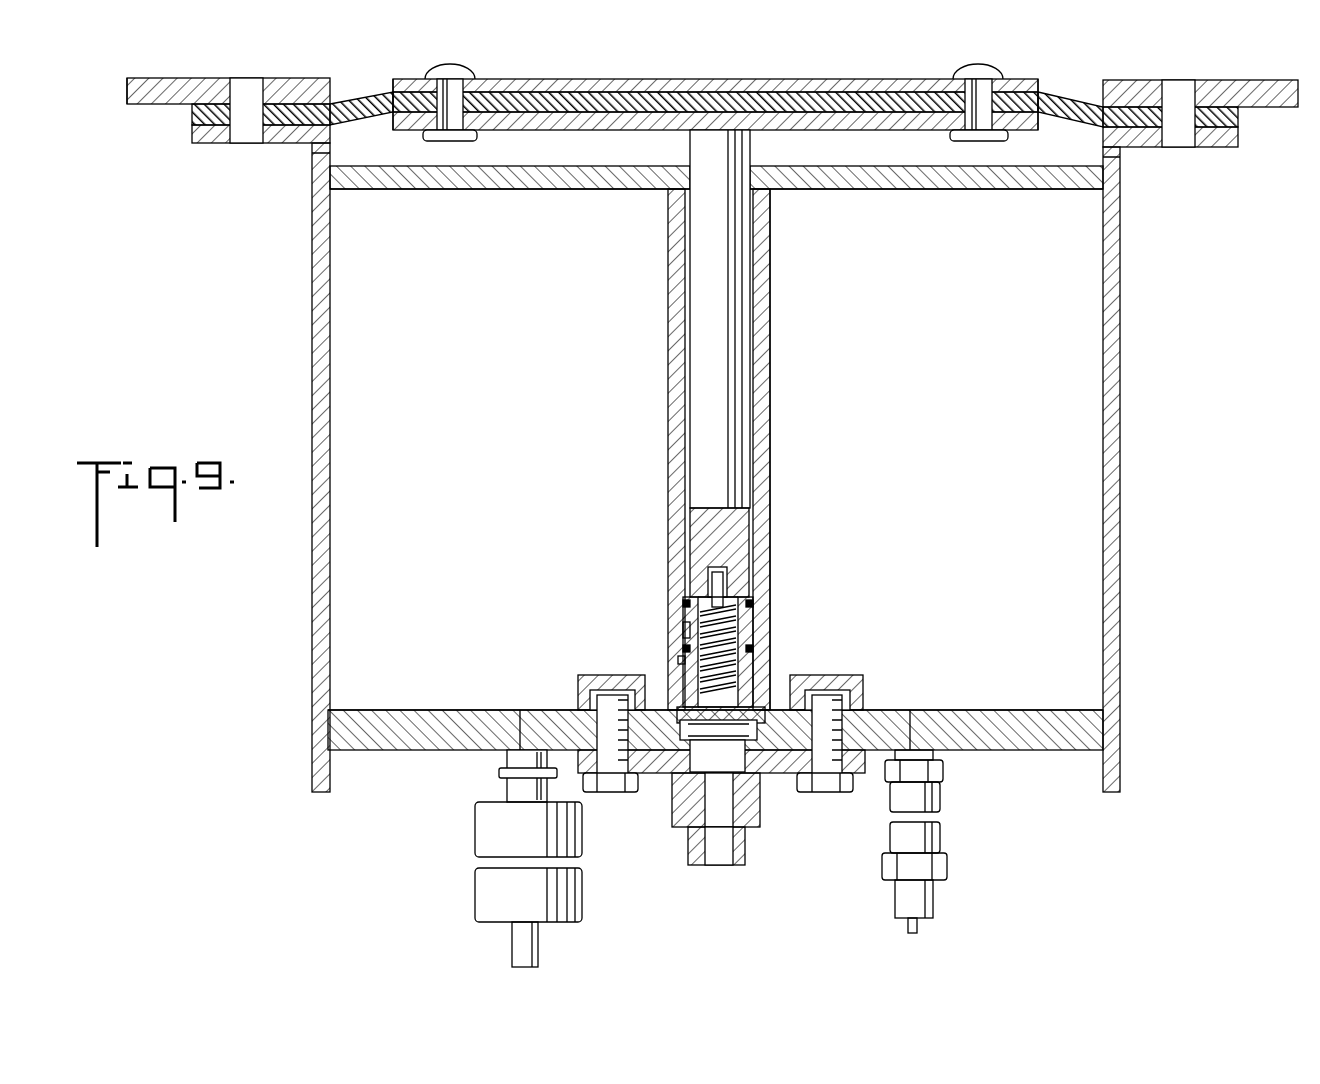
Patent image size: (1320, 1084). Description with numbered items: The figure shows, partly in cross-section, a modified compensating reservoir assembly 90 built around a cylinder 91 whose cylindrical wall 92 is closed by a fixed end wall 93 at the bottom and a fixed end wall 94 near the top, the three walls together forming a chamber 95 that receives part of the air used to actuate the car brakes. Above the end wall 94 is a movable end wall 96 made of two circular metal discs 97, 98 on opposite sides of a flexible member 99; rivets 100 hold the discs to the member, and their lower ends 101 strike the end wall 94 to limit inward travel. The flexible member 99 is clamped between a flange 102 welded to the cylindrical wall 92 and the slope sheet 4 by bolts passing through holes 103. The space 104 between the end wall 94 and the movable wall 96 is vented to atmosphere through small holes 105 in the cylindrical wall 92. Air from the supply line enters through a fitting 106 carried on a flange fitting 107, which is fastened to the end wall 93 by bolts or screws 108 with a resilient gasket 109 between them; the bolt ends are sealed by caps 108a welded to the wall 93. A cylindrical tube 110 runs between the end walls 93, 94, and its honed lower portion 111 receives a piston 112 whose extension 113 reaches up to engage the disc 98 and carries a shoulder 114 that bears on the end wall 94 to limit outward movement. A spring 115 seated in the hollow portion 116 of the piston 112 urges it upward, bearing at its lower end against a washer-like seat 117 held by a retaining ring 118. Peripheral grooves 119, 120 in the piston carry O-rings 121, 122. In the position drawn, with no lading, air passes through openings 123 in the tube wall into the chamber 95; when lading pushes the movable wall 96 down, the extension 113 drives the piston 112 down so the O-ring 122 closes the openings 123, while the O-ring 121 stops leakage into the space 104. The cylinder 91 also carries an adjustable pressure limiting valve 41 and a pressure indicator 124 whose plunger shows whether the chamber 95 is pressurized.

The slope sheet 4 is at (310, 80).
The adjustable pressure limiting valve 41 is at (940, 835).
The compensating reservoir assembly 90 is at (1143, 452).
The cylinder 91 is at (1120, 723).
The cylindrical wall 92 is at (1122, 588).
The fixed end wall 93 is at (1030, 752).
The fixed end wall 94 is at (1000, 190).
The chamber 95 is at (932, 419).
The movable end wall 96 is at (600, 74).
The circular end metal disc 97 is at (632, 80).
The circular end metal disc 98 is at (605, 130).
The flexible member 99 is at (368, 96).
The rivets 100 is at (456, 70).
The lower ends 101 is at (450, 140).
The flange 102 is at (298, 150).
The holes 103 is at (247, 76).
The space 104 is at (560, 160).
The small holes 105 is at (300, 160).
The fitting 106 is at (688, 850).
The flange fitting 107 is at (760, 822).
The bolts or screws 108 is at (603, 795).
The caps 108a is at (580, 678).
The resilient gasket 109 is at (858, 776).
The cylindrical tube 110 is at (772, 322).
The lower portion 111 is at (752, 575).
The piston 112 is at (755, 610).
The extension 113 is at (742, 412).
The shoulder 114 is at (756, 182).
The spring 115 is at (712, 592).
The hollow portion 116 is at (738, 615).
The seat 117 is at (718, 746).
The retaining ring 118 is at (680, 774).
The peripheral groove 119 is at (686, 608).
The peripheral groove 120 is at (683, 640).
The O-ring 121 is at (683, 601).
The O-ring 122 is at (683, 648).
The openings 123 is at (680, 660).
The pressure indicator 124 is at (475, 832).